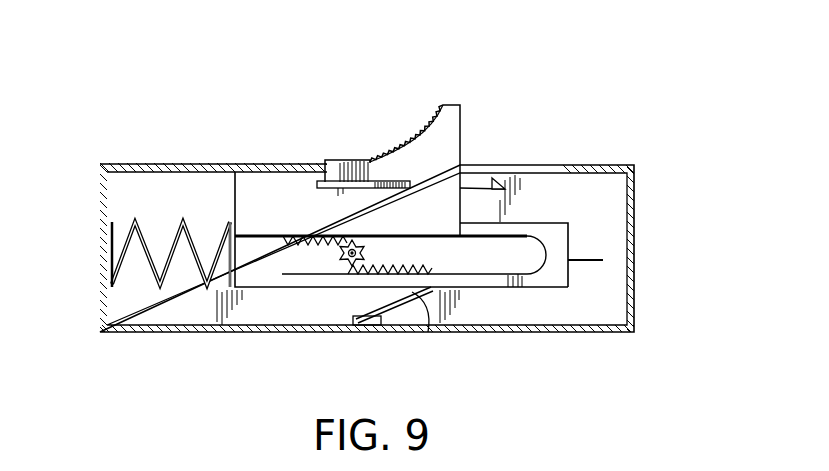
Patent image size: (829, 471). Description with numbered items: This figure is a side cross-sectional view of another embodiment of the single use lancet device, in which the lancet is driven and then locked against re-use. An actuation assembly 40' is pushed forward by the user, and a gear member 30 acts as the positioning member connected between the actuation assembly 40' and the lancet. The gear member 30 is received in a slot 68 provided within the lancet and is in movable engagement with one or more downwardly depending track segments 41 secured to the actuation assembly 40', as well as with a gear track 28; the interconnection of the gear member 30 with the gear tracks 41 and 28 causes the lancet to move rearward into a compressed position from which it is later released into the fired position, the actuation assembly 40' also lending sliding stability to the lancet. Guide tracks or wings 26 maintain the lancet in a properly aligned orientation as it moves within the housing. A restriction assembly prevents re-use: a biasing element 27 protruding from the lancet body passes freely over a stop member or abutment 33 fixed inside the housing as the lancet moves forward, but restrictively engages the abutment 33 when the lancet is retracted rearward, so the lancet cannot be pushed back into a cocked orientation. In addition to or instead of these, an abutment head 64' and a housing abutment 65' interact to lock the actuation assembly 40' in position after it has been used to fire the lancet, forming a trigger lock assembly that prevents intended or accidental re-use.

The guide tracks or wings 26 is at (340, 163).
The biasing element 27 is at (428, 332).
The gear track 28 is at (380, 266).
The gear member 30 is at (324, 236).
The stop member or abutment 33 is at (383, 326).
The actuation assembly 40' is at (415, 123).
The downwardly depending track segments 41 is at (280, 268).
The abutment head 64' is at (499, 168).
The housing abutment 65' is at (367, 212).
The slot 68 is at (527, 251).